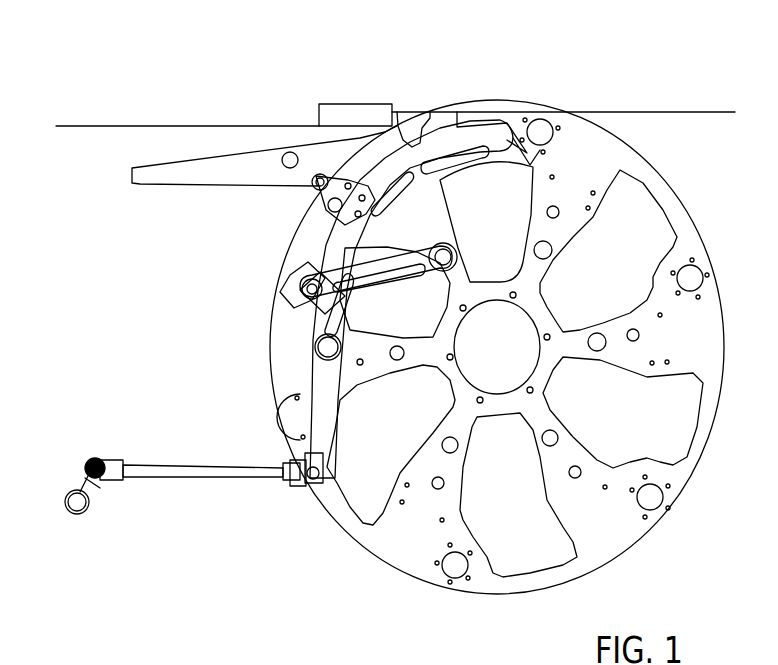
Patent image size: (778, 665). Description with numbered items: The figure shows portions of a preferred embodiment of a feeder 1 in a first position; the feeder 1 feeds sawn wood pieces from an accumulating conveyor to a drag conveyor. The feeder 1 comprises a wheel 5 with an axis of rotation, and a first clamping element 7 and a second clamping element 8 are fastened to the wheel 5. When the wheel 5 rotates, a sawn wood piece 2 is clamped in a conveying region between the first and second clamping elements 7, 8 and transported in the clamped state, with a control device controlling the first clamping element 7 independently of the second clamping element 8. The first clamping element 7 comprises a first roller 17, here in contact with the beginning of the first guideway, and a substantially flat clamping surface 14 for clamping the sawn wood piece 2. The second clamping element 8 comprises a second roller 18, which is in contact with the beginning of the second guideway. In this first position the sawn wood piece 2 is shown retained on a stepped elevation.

The feeder 1 is at (78, 40).
The sawn wood piece 2 is at (333, 112).
The wheel 5 is at (390, 537).
The first clamping element 7 is at (297, 305).
The second clamping element 8 is at (416, 130).
The clamping surface 14 is at (251, 245).
The first roller 17 is at (312, 292).
The second roller 18 is at (318, 186).